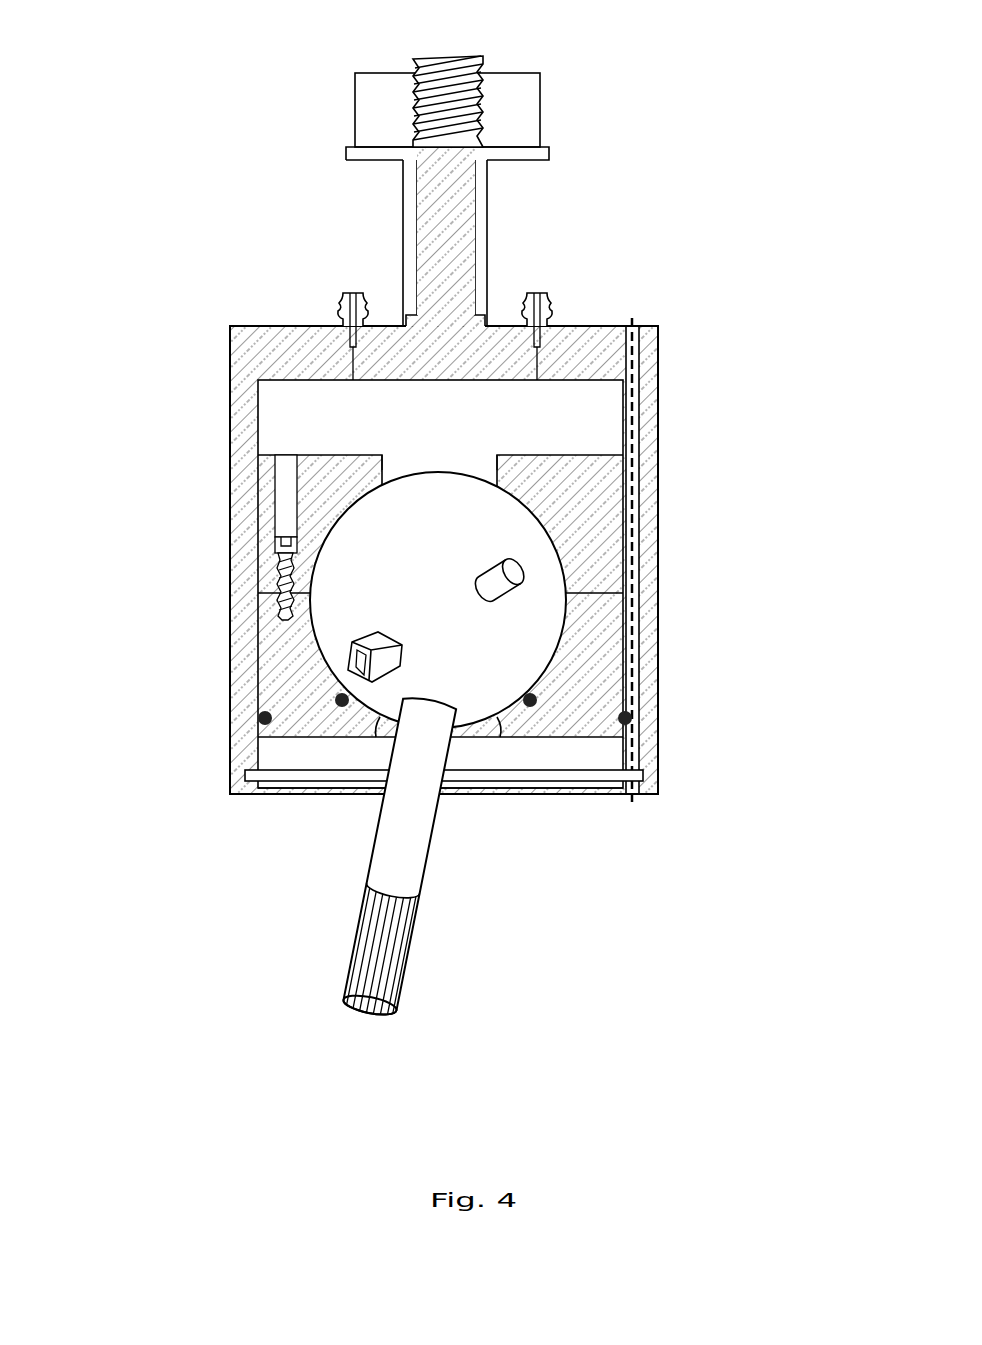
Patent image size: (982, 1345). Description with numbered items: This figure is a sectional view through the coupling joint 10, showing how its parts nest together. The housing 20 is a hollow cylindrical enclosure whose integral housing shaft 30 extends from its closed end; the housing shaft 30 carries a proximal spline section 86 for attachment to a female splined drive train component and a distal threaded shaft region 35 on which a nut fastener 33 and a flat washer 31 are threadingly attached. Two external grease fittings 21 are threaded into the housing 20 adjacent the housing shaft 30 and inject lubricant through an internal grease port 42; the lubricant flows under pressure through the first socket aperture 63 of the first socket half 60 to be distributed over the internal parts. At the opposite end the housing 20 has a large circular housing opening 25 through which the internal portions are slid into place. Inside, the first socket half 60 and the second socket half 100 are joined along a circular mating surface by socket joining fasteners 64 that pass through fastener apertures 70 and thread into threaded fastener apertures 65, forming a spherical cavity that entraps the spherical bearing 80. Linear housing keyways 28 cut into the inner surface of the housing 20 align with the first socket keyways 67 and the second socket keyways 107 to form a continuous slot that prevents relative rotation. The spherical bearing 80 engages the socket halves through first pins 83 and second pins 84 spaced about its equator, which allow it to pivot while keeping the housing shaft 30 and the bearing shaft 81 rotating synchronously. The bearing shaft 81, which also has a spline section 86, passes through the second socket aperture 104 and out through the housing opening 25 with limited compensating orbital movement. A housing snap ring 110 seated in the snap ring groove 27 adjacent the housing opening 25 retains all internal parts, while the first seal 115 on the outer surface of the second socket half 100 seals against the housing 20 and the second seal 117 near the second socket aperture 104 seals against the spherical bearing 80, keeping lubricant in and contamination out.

The coupling joint 10 is at (155, 118).
The housing 20 is at (232, 345).
The grease fittings 21 is at (340, 298).
The housing opening 25 is at (562, 797).
The snap ring groove 27 is at (640, 775).
The housing keyway 28 is at (633, 577).
The housing shaft 30 is at (425, 273).
The flat washer 31 is at (346, 152).
The nut fastener 33 is at (355, 105).
The threaded shaft region 35 is at (485, 100).
The internal grease port 42 is at (355, 365).
The first socket half 60 is at (320, 480).
The first socket aperture 63 is at (395, 462).
The socket joining fasteners 64 is at (205, 560).
The threaded fastener apertures 65 is at (290, 580).
The first socket keyways 67 is at (640, 525).
The fastener apertures 70 is at (290, 500).
The spherical bearing 80 is at (481, 596).
The bearing shaft 81 is at (481, 596).
The first pins 83 is at (483, 572).
The second pins 84 is at (406, 666).
The spline section 86 is at (403, 212).
The second socket half 100 is at (585, 700).
The second socket aperture 104 is at (490, 720).
The second socket keyways 107 is at (632, 628).
The housing snap ring 110 is at (255, 800).
The first seal 115 is at (625, 718).
The second seal 117 is at (534, 698).